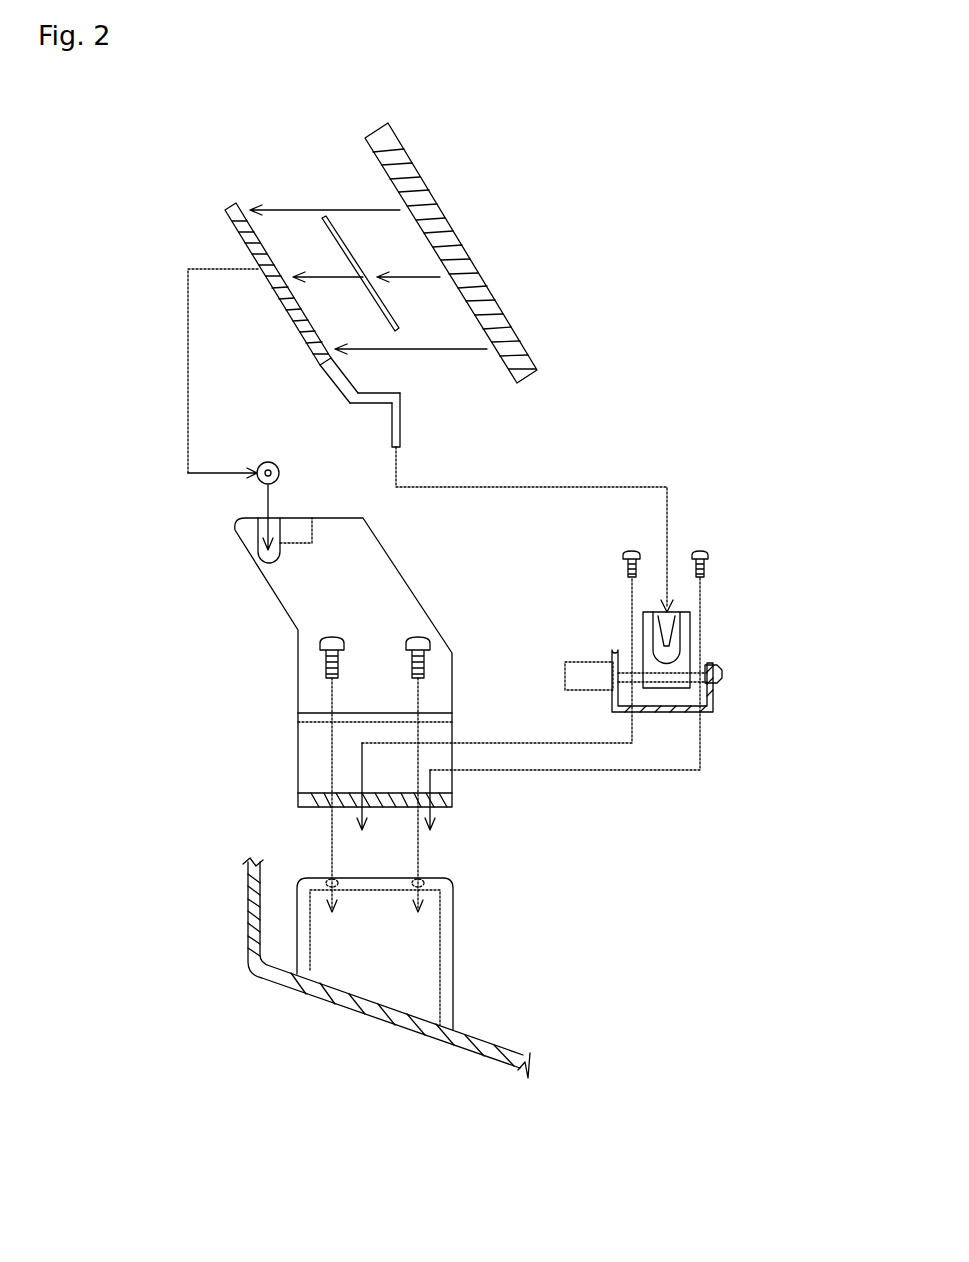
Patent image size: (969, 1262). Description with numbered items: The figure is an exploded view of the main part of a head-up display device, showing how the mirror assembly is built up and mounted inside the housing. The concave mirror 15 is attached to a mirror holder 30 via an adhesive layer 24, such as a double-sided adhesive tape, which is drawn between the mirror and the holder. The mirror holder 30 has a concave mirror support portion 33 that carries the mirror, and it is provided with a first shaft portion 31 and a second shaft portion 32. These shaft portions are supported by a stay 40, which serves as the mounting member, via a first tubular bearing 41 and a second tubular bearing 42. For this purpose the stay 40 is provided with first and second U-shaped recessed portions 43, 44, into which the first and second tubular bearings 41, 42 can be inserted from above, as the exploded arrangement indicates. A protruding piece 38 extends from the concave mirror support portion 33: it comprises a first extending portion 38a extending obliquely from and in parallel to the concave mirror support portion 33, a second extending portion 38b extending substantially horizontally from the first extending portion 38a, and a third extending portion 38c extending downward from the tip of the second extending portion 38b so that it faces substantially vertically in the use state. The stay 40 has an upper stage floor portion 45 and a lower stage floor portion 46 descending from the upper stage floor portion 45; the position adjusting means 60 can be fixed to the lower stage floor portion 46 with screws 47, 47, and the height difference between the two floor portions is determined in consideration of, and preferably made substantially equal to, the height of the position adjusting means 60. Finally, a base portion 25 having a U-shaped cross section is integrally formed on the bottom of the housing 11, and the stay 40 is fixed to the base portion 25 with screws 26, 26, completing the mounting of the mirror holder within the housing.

The housing 11 is at (247, 908).
The concave mirror 15 is at (453, 235).
The adhesive layer 24 is at (343, 246).
The base portion 25 is at (450, 932).
The screws 26 is at (420, 636).
The mirror holder 30 is at (237, 269).
The first shaft portion 31 is at (252, 284).
The second shaft portion 32 is at (252, 284).
The concave mirror support portion 33 is at (270, 266).
The protruding piece 38 is at (394, 416).
The first extending portion 38a is at (348, 373).
The second extending portion 38b is at (385, 390).
The third extending portion 38c is at (403, 418).
The stay 40 is at (308, 660).
The first tubular bearing 41 is at (271, 451).
The second tubular bearing 42 is at (268, 461).
The first U-shaped recessed portion 43 is at (226, 538).
The second U-shaped recessed portion 44 is at (262, 513).
The upper stage floor portion 45 is at (313, 713).
The lower stage floor portion 46 is at (313, 793).
The screws 47 is at (630, 550).
The position adjusting means 60 is at (675, 646).